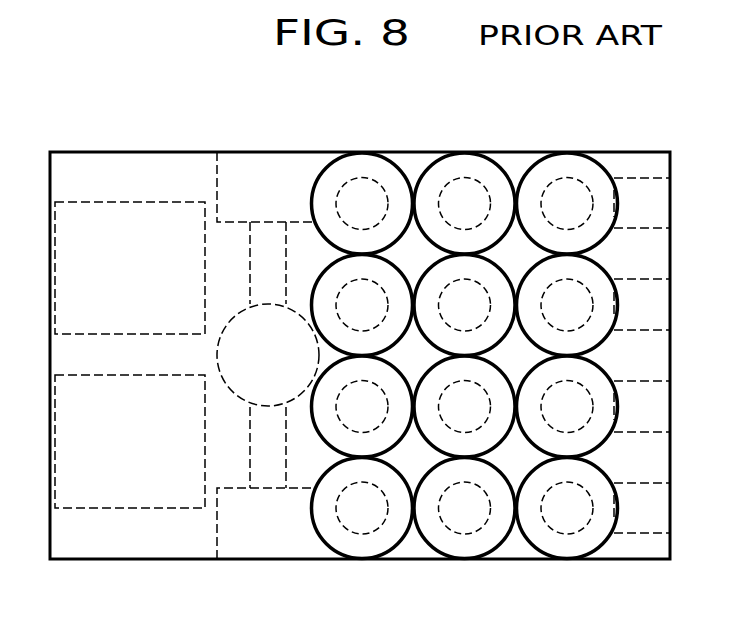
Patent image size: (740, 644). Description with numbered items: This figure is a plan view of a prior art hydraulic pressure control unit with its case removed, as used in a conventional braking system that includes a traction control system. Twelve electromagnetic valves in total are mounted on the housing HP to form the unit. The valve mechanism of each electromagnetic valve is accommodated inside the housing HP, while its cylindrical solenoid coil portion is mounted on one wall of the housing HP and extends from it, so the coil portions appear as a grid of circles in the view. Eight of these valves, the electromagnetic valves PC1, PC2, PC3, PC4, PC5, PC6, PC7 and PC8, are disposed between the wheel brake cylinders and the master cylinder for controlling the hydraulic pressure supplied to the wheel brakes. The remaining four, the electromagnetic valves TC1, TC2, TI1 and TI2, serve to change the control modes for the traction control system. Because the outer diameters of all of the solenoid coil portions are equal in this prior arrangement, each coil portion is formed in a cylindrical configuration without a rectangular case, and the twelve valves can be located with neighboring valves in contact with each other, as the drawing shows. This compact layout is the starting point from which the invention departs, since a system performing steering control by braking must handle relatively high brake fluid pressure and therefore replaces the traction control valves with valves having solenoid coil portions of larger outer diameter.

The housing HP is at (140, 548).
The electromagnetic valve TC1 is at (328, 423).
The electromagnetic valve TC2 is at (328, 288).
The electromagnetic valve TI1 is at (340, 542).
The electromagnetic valve TI2 is at (340, 173).
The electromagnetic valve PC1 is at (578, 538).
The electromagnetic valve PC2 is at (600, 432).
The electromagnetic valve PC3 is at (600, 280).
The electromagnetic valve PC4 is at (578, 172).
The electromagnetic valve PC5 is at (437, 538).
The electromagnetic valve PC6 is at (487, 438).
The electromagnetic valve PC7 is at (487, 272).
The electromagnetic valve PC8 is at (438, 172).